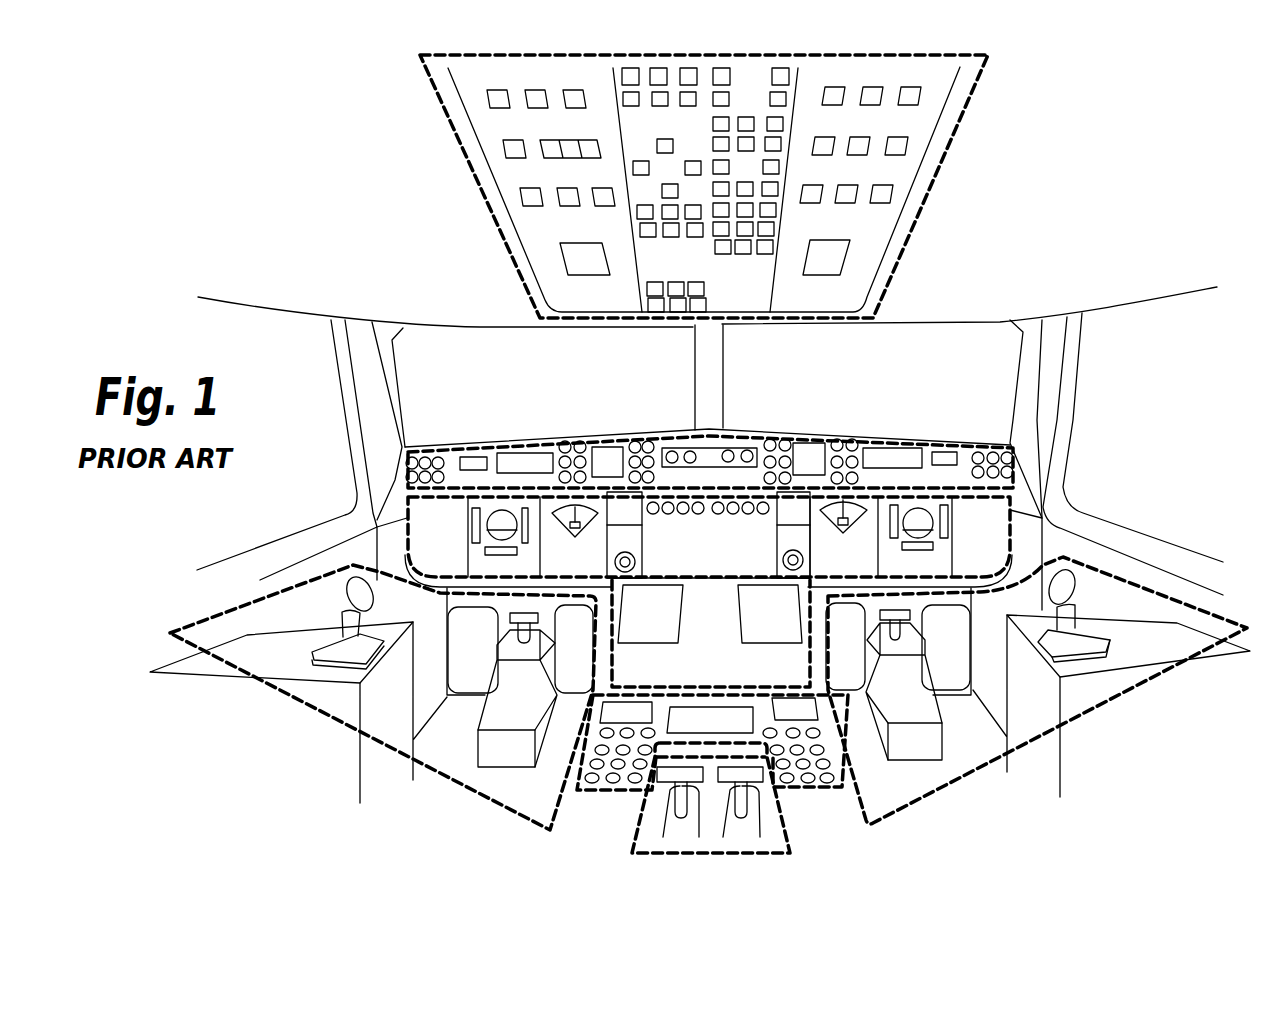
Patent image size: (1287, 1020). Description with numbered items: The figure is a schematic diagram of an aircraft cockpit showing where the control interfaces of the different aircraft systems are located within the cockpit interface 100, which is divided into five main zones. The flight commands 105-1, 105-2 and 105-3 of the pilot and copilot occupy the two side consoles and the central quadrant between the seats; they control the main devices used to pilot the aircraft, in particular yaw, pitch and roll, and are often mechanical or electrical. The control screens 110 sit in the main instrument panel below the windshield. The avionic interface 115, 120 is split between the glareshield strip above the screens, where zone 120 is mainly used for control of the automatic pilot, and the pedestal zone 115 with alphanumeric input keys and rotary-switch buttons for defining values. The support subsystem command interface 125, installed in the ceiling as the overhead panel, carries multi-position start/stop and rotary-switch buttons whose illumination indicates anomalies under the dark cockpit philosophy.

The cockpit interface 100 is at (1053, 213).
The flight commands 105-1 is at (295, 703).
The flight commands 105-2 is at (1113, 703).
The flight commands 105-3 is at (640, 817).
The control screens 110 is at (408, 547).
The avionic interface 115 is at (807, 787).
The avionic interface 120 is at (548, 445).
The support subsystem command interface 125 is at (470, 172).